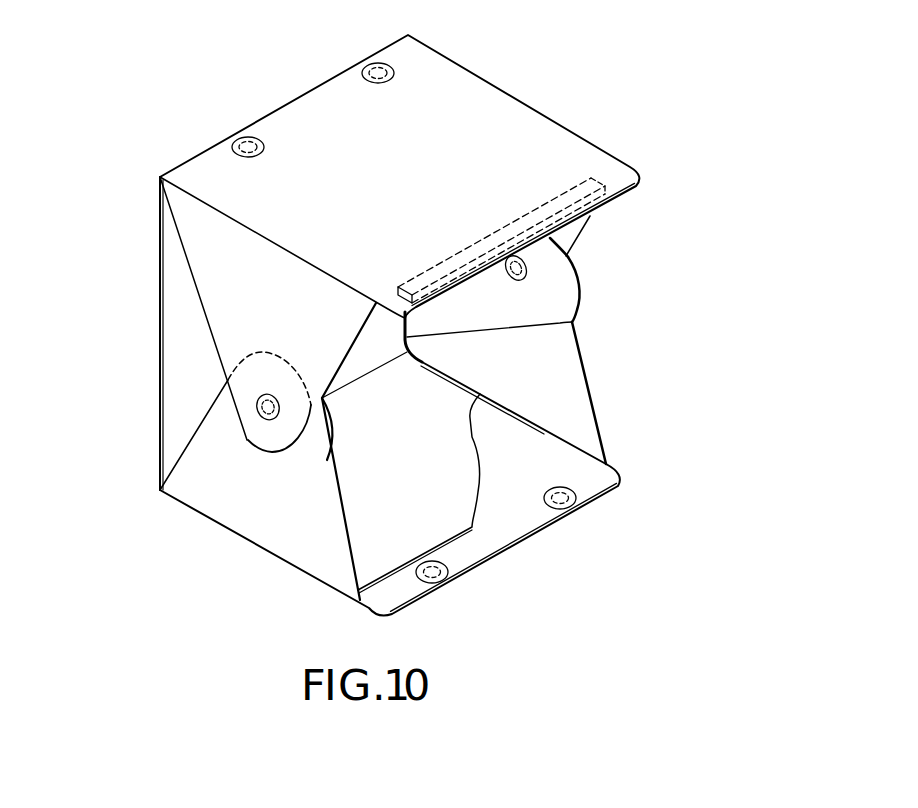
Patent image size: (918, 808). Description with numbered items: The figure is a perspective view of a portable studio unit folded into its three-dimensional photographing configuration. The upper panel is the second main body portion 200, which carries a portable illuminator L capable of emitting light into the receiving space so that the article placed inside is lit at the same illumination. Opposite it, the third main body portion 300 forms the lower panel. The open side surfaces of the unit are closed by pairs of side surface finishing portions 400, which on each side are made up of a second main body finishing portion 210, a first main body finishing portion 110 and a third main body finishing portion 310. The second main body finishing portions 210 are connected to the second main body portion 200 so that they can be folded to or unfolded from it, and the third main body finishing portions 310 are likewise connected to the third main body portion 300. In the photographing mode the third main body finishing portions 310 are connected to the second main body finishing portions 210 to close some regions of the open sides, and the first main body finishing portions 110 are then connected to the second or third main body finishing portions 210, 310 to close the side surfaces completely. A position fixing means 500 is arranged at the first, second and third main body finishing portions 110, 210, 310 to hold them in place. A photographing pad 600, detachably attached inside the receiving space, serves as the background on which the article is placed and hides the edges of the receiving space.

The first main body finishing portion 110 is at (183, 380).
The second main body portion 200 is at (551, 131).
The second main body finishing portion 210 is at (228, 272).
The third main body portion 300 is at (505, 468).
The third main body finishing portion 310 is at (217, 493).
The side surface finishing portion 400 is at (80, 308).
The position fixing means 500 is at (262, 415).
The photographing pad 600 is at (448, 540).
The portable illuminator L is at (483, 243).